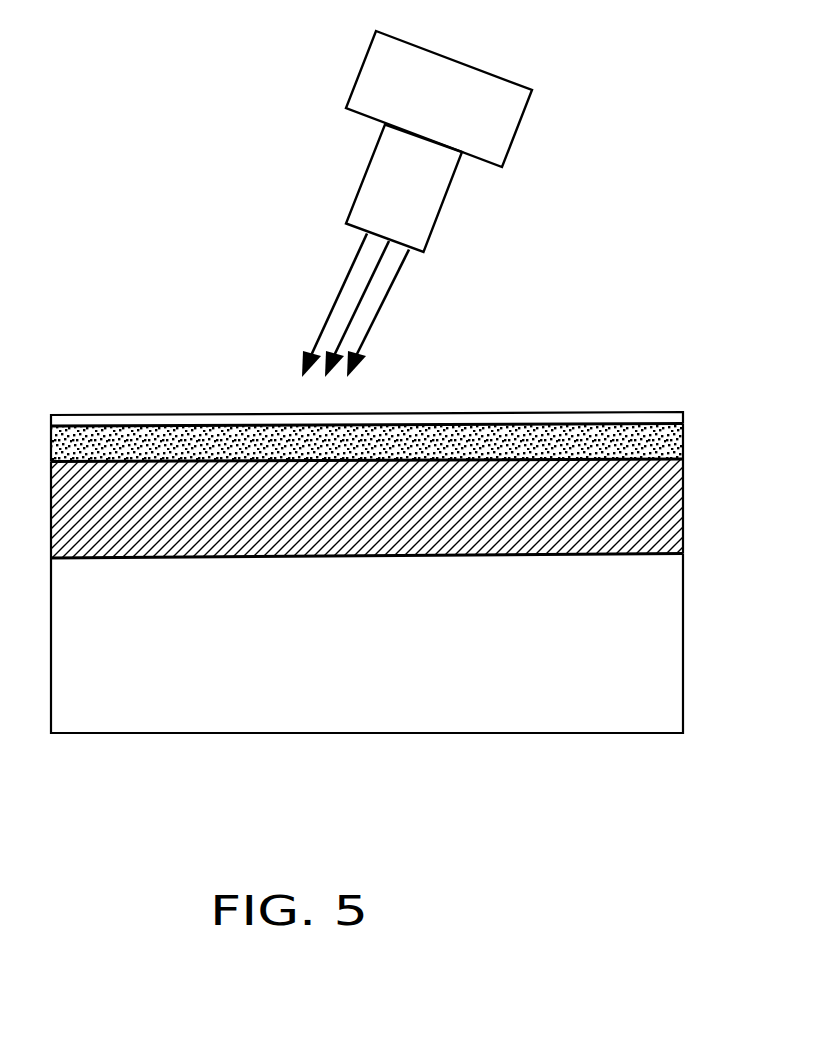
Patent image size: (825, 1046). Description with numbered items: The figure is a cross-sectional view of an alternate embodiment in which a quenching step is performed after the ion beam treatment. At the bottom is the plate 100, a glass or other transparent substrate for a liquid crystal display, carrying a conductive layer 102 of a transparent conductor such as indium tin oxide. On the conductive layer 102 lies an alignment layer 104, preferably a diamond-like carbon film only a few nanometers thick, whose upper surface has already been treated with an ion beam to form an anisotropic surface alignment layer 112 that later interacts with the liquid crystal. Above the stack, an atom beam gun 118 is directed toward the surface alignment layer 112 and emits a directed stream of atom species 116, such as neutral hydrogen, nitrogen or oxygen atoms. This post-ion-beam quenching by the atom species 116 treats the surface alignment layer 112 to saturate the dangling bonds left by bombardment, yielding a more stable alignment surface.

The plate 100 is at (683, 612).
The conductive layer 102 is at (683, 507).
The alignment layer 104 is at (683, 439).
The surface alignment layer 112 is at (683, 413).
The directed stream of atom species 116 is at (392, 296).
The atom beam gun 118 is at (451, 193).